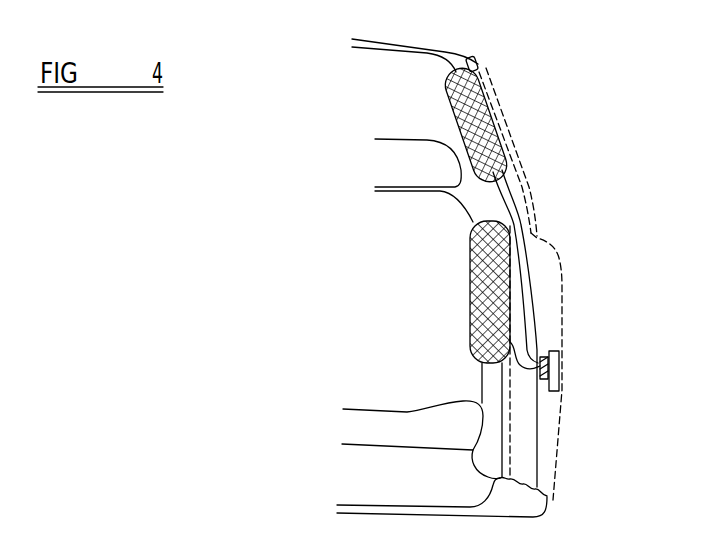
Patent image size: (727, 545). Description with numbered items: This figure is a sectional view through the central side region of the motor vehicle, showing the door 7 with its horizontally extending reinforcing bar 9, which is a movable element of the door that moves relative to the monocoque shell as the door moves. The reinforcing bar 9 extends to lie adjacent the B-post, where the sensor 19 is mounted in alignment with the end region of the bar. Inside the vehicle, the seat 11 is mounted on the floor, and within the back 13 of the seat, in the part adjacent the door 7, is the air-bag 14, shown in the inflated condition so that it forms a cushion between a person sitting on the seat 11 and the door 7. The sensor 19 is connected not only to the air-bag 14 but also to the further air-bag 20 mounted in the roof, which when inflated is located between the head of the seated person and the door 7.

The further air-bag 20 is at (480, 86).
The air-bag 14 is at (505, 230).
The back of the seat 13 is at (423, 258).
The door 7 is at (560, 287).
The seat 11 is at (401, 400).
The sensor 19 is at (541, 357).
The reinforcing bar 9 is at (559, 377).